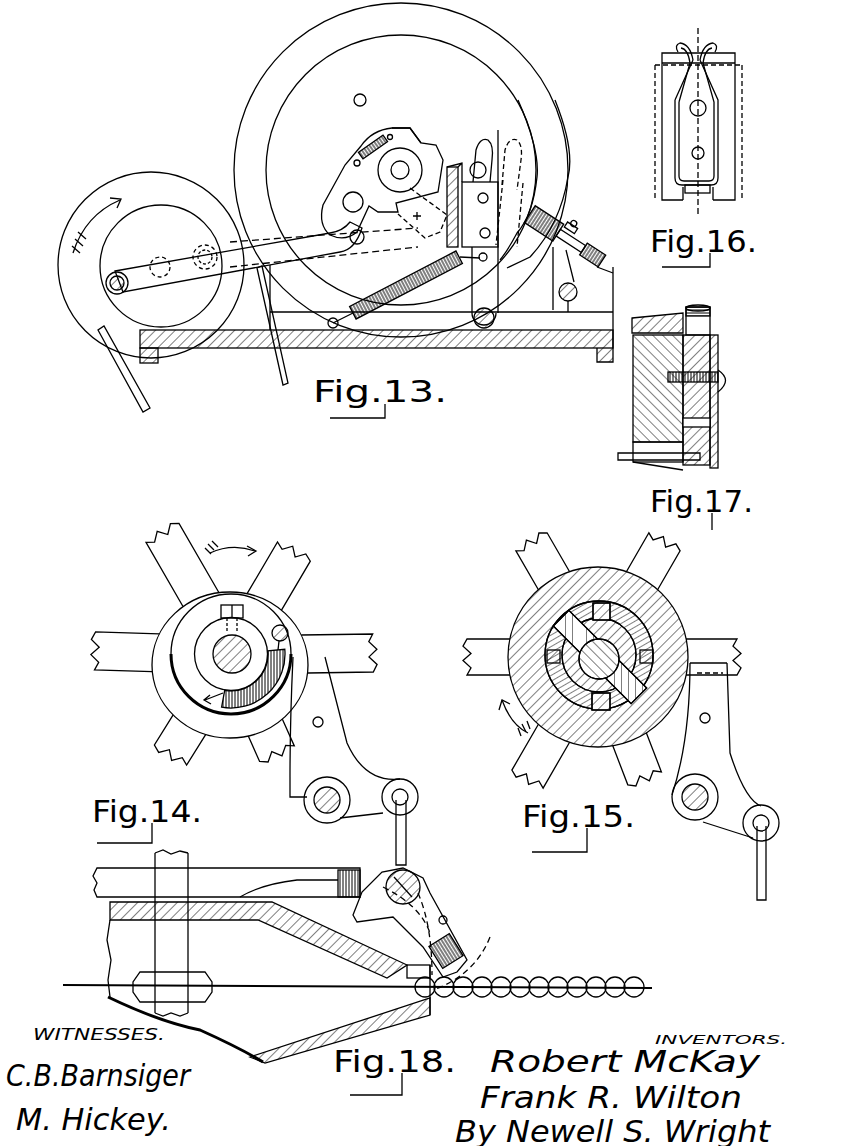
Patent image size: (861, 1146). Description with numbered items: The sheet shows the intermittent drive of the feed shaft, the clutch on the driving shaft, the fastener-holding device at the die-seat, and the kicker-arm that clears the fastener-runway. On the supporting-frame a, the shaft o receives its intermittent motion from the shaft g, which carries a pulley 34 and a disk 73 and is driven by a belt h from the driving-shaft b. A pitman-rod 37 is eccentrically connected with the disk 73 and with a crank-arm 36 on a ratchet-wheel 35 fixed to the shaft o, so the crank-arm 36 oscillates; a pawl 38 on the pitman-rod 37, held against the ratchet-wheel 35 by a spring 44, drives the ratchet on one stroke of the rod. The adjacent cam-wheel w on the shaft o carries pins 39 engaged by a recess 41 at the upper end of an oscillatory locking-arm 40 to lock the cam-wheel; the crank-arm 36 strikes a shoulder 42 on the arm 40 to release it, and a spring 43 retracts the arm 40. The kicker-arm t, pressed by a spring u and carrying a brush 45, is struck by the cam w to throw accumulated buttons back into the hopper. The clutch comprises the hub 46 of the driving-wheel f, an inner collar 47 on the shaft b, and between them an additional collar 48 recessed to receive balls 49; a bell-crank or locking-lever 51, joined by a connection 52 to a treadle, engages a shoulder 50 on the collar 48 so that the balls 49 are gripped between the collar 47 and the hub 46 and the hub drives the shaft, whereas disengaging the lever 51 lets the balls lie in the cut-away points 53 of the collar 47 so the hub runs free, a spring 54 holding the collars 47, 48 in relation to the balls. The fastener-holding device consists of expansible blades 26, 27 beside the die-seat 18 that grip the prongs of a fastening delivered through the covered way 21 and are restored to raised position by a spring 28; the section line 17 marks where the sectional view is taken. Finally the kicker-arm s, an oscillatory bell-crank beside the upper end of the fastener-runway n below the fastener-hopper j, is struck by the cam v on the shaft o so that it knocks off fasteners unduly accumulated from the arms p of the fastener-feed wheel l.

In FIG. 13, the pulley 34 is at (141, 265).
In FIG. 13, the disk 73 is at (130, 253).
In FIG. 13, the additional shaft g is at (153, 256).
In FIG. 13, the belt h is at (193, 339).
In FIG. 13, the pitman-rod 37 is at (266, 249).
In FIG. 13, the cam w is at (401, 170).
In FIG. 13, the shaft o is at (397, 173).
In FIG. 18, the shaft o is at (172, 933).
In FIG. 13, the ratchet-wheel 35 is at (406, 123).
In FIG. 13, the crank-arm 36 is at (381, 183).
In FIG. 13, the spring 44 is at (375, 136).
In FIG. 13, the pawl 38 is at (385, 190).
In FIG. 13, the pins or shoulders 39 is at (404, 185).
In FIG. 13, the recess 41 is at (485, 213).
In FIG. 13, the shoulder 42 is at (451, 249).
In FIG. 13, the spring 43 is at (404, 289).
In FIG. 13, the oscillatory locking-arm 40 is at (506, 287).
In FIG. 13, the kicker-arm t is at (540, 184).
In FIG. 13, the spring u is at (567, 279).
In FIG. 18, the spring u is at (455, 920).
In FIG. 13, the brush 45 is at (573, 233).
In FIG. 13, the supporting-frame a is at (376, 319).
In FIG. 17, the supporting-frame a is at (644, 398).
In FIG. 16, the section line 17 is at (698, 118).
In FIG. 16, the die-seat 18 is at (672, 66).
In FIG. 17, the die-seat 18 is at (716, 401).
In FIG. 16, the fastener-holding blade 26 is at (668, 122).
In FIG. 16, the fastener-holding blade 27 is at (713, 126).
In FIG. 17, the fastener-holding blade 27 is at (718, 318).
In FIG. 16, the spring 28 is at (672, 203).
In FIG. 17, the spring 28 is at (651, 468).
In FIG. 17, the covered way 21 is at (657, 313).
In FIG. 14, the driving-wheel f is at (225, 538).
In FIG. 15, the driving-wheel f is at (532, 628).
In FIG. 14, the hub 46 is at (234, 644).
In FIG. 15, the hub 46 is at (602, 660).
In FIG. 14, the inner collar 47 is at (220, 654).
In FIG. 15, the inner collar 47 is at (678, 688).
In FIG. 14, the additional collar 48 is at (219, 618).
In FIG. 15, the additional collar 48 is at (570, 654).
In FIG. 14, the driving-shaft b is at (216, 655).
In FIG. 15, the driving-shaft b is at (563, 627).
In FIG. 14, the shoulder or stop 50 is at (313, 633).
In FIG. 14, the spring 54 is at (244, 709).
In FIG. 14, the bell-crank locking-lever 51 is at (354, 740).
In FIG. 15, the bell-crank locking-lever 51 is at (725, 752).
In FIG. 14, the connection 52 is at (417, 832).
In FIG. 15, the connection 52 is at (776, 863).
In FIG. 15, the balls 49 is at (603, 658).
In FIG. 15, the cut-away points 53 is at (601, 657).
In FIG. 18, the cam v is at (226, 882).
In FIG. 18, the fastener-hopper j is at (268, 982).
In FIG. 18, the arms p is at (357, 988).
In FIG. 18, the fastener-feed wheel l is at (291, 970).
In FIG. 18, the kicker-arm s is at (421, 929).
In FIG. 18, the fastener-runway n is at (529, 996).